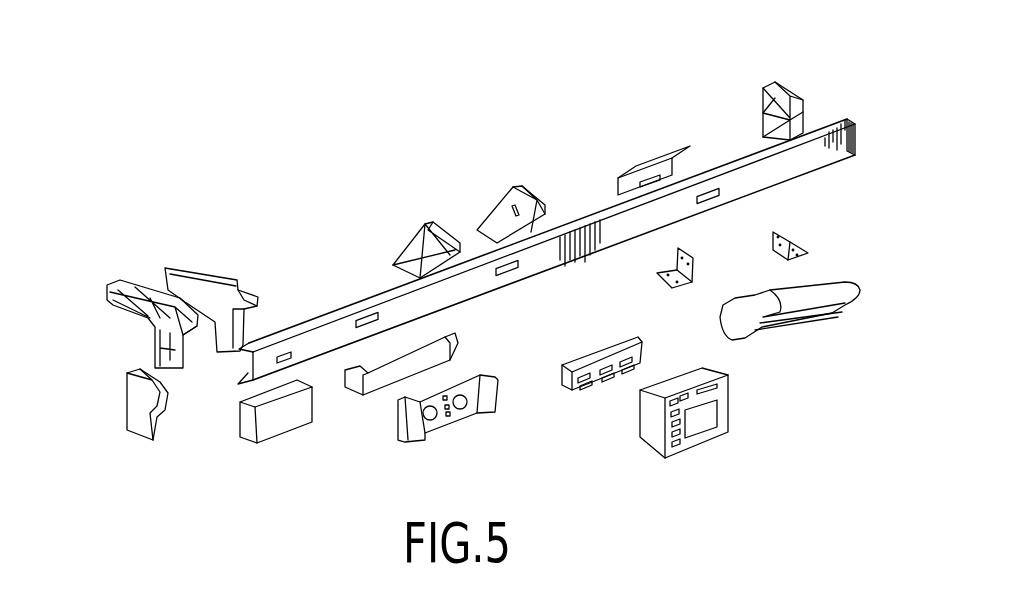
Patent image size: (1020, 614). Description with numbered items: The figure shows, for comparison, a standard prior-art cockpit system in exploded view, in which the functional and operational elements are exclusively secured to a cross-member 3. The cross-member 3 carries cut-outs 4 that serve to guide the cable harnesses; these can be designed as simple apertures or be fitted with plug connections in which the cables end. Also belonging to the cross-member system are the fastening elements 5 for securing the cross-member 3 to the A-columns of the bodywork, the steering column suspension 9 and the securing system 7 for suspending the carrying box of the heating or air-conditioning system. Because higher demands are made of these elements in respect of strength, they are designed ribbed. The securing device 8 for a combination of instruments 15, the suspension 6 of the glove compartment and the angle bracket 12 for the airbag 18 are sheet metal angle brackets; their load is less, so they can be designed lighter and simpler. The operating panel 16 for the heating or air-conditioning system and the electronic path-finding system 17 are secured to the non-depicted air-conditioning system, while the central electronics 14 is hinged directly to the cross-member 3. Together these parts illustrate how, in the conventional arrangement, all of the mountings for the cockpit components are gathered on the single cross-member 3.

The cross-member 3 is at (850, 133).
The cut-outs 4 is at (364, 322).
The fastening elements 5 is at (137, 412).
The suspension of the glove compartment 6 is at (642, 160).
The securing system 7 is at (430, 228).
The securing device 8 is at (450, 343).
The steering column suspension 9 is at (167, 273).
The angle bracket 12 is at (680, 258).
The central electronics 14 is at (300, 410).
The combination of instruments 15 is at (490, 398).
The operating panel 16 is at (640, 344).
The electronic path-finding system 17 is at (730, 402).
The airbag 18 is at (824, 288).